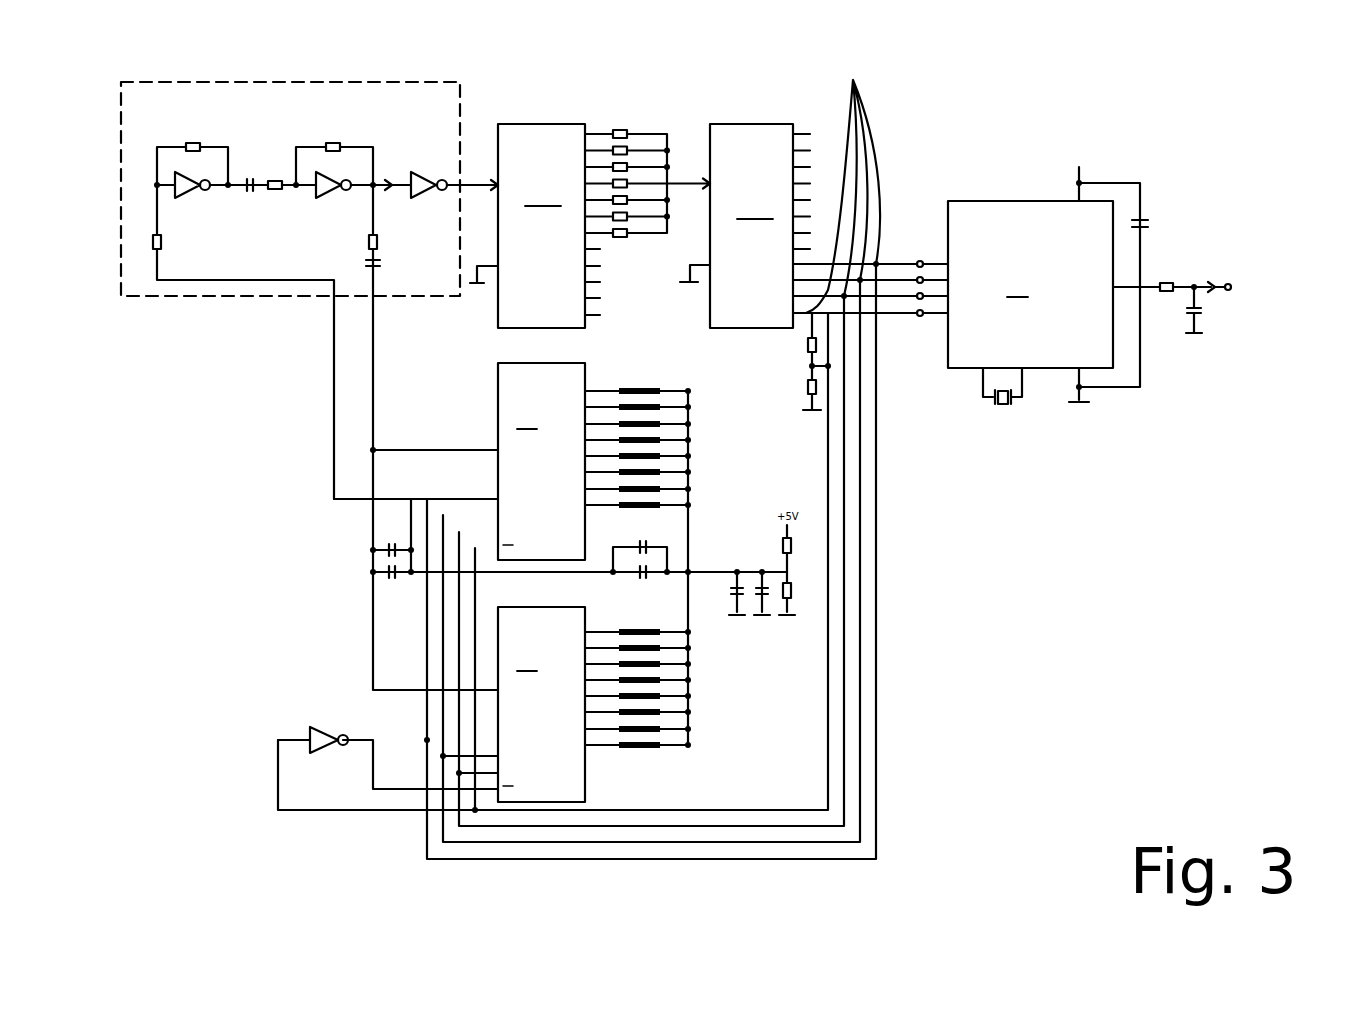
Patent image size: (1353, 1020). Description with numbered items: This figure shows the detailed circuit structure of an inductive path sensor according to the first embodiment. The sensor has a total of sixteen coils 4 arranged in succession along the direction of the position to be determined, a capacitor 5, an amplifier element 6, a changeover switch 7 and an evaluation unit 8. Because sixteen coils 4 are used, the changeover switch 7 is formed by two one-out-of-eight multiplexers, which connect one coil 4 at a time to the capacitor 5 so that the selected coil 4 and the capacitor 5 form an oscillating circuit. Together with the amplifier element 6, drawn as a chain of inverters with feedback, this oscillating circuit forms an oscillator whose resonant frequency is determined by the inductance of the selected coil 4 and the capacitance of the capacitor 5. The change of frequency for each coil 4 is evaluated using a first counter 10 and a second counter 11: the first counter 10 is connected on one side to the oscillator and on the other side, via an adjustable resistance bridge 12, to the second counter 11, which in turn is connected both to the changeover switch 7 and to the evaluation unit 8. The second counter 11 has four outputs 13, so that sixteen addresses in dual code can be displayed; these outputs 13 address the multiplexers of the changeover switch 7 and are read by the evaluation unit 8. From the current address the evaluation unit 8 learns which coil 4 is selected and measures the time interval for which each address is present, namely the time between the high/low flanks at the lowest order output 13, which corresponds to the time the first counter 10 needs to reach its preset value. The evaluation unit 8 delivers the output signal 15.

The coils 4 is at (648, 424).
The capacitor 5 is at (675, 539).
The amplifier element 6 is at (121, 245).
The changeover switch 7 is at (594, 582).
The evaluation unit 8 is at (1089, 278).
The first counter 10 is at (590, 226).
The second counter 11 is at (814, 226).
The adjustable resistance bridge 12 is at (677, 95).
The outputs 13 is at (843, 178).
The output signal 15 is at (1231, 288).